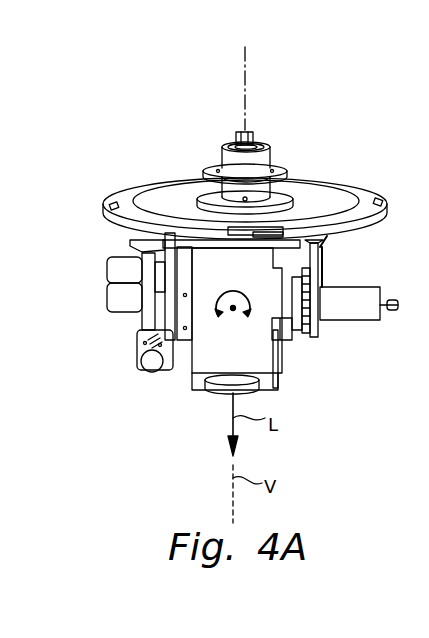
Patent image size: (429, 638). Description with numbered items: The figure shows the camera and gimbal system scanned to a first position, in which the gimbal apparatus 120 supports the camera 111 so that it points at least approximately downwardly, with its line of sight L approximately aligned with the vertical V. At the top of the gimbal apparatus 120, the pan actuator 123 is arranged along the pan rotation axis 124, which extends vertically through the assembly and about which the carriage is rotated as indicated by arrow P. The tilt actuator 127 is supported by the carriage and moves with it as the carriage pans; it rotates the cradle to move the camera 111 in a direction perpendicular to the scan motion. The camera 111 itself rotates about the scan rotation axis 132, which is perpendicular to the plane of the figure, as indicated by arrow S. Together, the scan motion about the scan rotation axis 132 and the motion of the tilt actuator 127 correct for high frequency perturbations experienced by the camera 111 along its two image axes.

The gimbal apparatus 120 is at (108, 160).
The pan actuator 123 is at (263, 155).
The pan rotation axis 124 is at (250, 79).
The tilt actuator 127 is at (347, 321).
The scan rotation axis 132 is at (233, 311).
The camera 111 is at (278, 378).